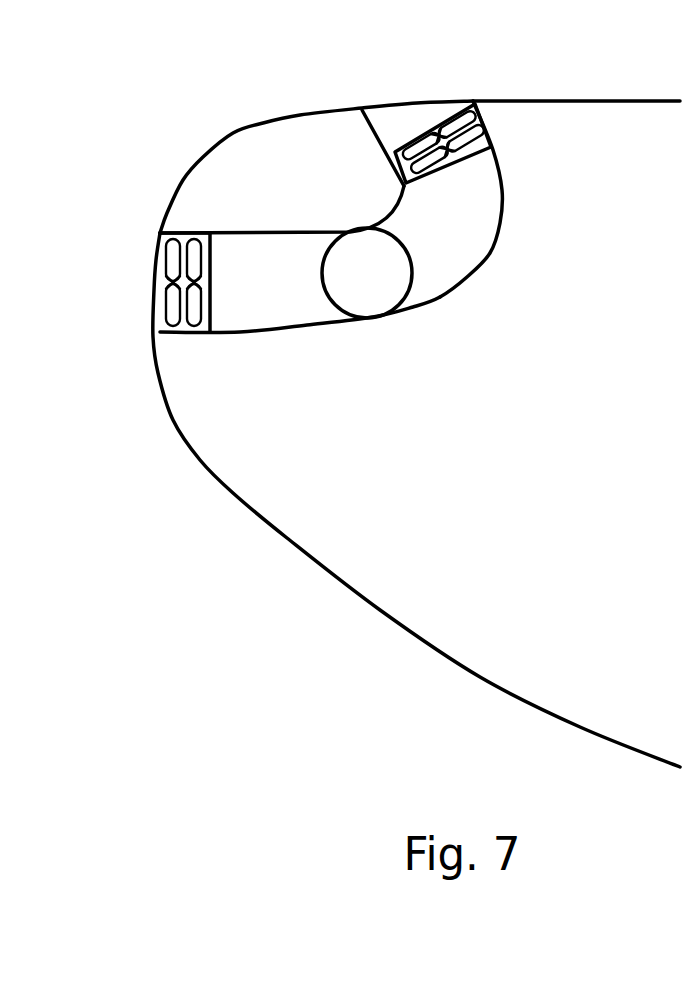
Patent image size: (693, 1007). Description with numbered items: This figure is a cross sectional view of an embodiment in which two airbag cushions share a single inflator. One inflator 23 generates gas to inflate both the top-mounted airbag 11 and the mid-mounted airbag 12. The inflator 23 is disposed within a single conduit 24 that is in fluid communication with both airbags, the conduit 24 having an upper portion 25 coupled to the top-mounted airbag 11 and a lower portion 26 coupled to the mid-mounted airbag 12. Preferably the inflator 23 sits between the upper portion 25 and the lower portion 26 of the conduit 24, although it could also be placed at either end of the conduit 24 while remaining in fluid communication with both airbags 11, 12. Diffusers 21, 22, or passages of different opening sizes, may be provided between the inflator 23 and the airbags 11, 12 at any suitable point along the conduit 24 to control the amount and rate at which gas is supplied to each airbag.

The top-mounted airbag 11 is at (427, 130).
The mid-mounted airbag 12 is at (162, 300).
The diffuser 21 is at (467, 167).
The diffuser 22 is at (205, 295).
The inflator 23 is at (368, 295).
The conduit 24 is at (457, 290).
The upper portion of the conduit 25 is at (453, 232).
The lower portion of the conduit 26 is at (258, 273).